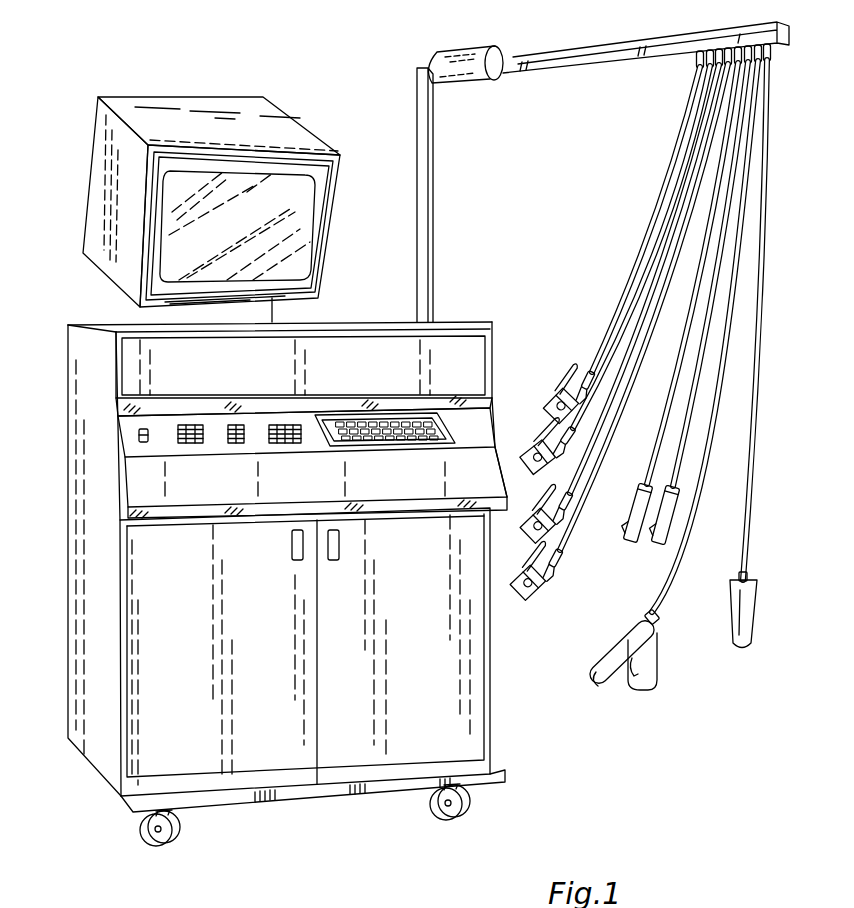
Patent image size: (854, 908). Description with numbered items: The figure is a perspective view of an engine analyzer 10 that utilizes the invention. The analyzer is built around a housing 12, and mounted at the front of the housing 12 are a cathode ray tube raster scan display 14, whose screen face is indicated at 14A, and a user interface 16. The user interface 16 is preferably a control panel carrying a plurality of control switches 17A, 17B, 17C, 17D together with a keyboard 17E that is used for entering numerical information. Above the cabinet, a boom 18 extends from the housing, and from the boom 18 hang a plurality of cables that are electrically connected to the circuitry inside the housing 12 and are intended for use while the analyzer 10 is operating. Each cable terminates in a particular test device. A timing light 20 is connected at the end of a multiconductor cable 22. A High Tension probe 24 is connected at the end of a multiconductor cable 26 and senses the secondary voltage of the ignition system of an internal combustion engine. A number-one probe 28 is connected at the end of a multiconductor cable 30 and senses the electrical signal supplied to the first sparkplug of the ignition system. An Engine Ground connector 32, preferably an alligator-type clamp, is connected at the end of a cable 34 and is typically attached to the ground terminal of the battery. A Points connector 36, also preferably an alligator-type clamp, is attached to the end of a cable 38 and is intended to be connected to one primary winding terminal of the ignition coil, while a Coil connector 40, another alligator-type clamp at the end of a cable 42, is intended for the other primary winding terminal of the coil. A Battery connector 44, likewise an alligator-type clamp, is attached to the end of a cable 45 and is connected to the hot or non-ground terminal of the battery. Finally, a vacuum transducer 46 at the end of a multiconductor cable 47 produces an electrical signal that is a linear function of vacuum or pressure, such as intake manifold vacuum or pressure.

The analyzer 10 is at (570, 742).
The housing 12 is at (80, 330).
The cathode ray tube raster scan display 14 is at (334, 192).
The display screen 14A is at (305, 226).
The user interface 16 is at (306, 428).
The control switch 17A is at (143, 443).
The control switch 17B is at (192, 444).
The control switch 17C is at (238, 444).
The control switch 17D is at (285, 444).
The keyboard 17E is at (390, 443).
The boom 18 is at (574, 49).
The timing light 20 is at (659, 656).
The multiconductor cable 22 is at (696, 563).
The High Tension probe 24 is at (659, 551).
The multiconductor cable 26 is at (681, 457).
The No. 1 probe 28 is at (631, 548).
The multiconductor cable 30 is at (657, 447).
The Engine Ground connector 32 is at (540, 604).
The cable 34 is at (569, 539).
The Points connector 36 is at (536, 548).
The cable 38 is at (581, 481).
The Coil connector 40 is at (533, 486).
The cable 42 is at (630, 281).
The Battery connector 44 is at (561, 390).
The cable 45 is at (621, 310).
The vacuum transducer 46 is at (758, 610).
The multiconductor cable 47 is at (762, 386).